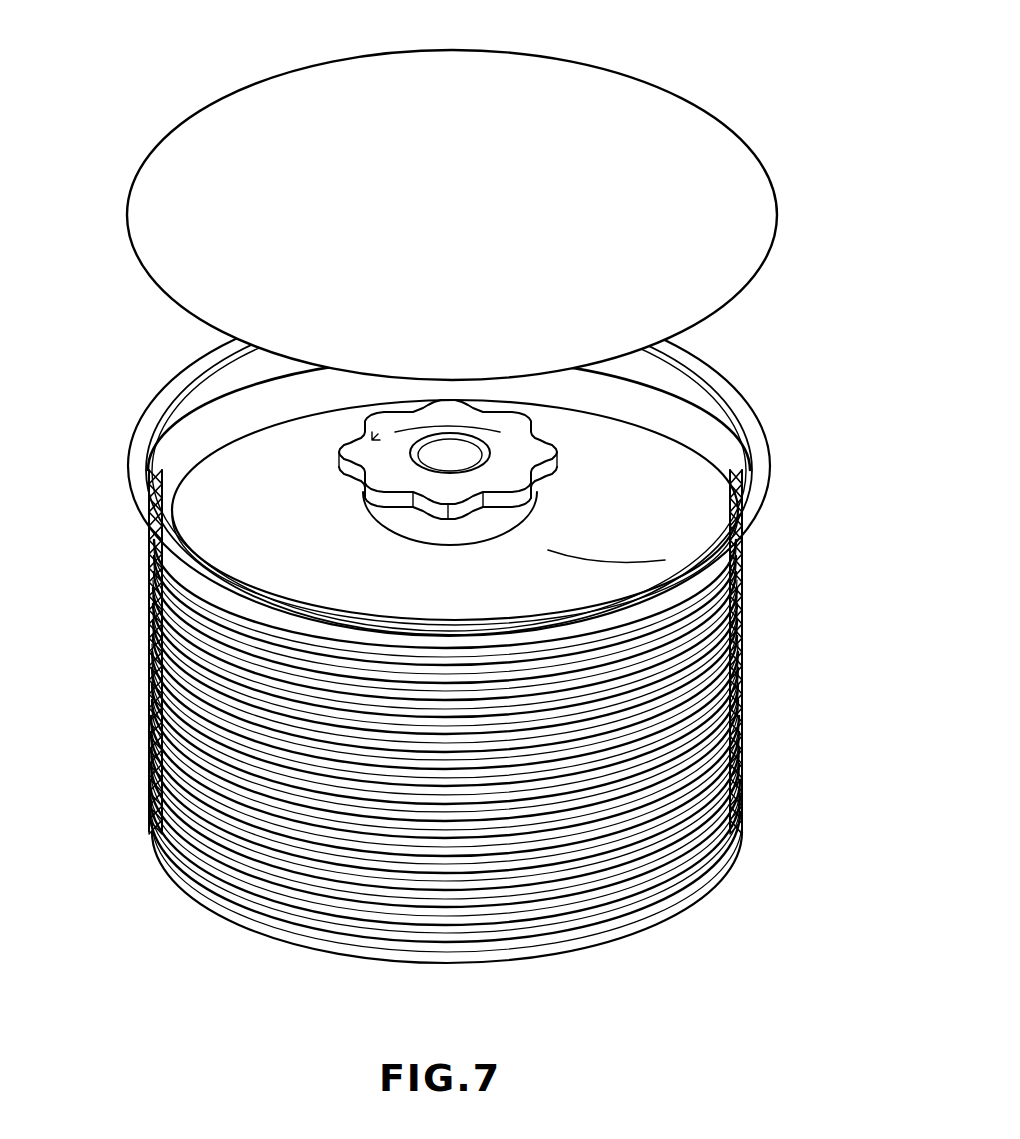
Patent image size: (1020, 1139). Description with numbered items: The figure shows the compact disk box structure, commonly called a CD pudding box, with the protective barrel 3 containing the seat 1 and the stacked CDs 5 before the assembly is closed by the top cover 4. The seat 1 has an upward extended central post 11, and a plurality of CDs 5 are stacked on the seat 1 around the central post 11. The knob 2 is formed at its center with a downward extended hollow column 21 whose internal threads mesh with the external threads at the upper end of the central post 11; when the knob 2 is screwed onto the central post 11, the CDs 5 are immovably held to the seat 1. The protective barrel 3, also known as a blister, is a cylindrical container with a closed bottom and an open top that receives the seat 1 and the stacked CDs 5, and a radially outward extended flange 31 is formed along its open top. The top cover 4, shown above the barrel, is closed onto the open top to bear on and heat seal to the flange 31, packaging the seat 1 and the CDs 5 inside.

The seat 1 is at (568, 943).
The central post 11 is at (473, 458).
The knob 2 is at (510, 462).
The hollow column 21 is at (420, 462).
The protective barrel 3 is at (743, 641).
The flange 31 is at (760, 490).
The top cover 4 is at (622, 135).
The CDs 5 is at (240, 656).